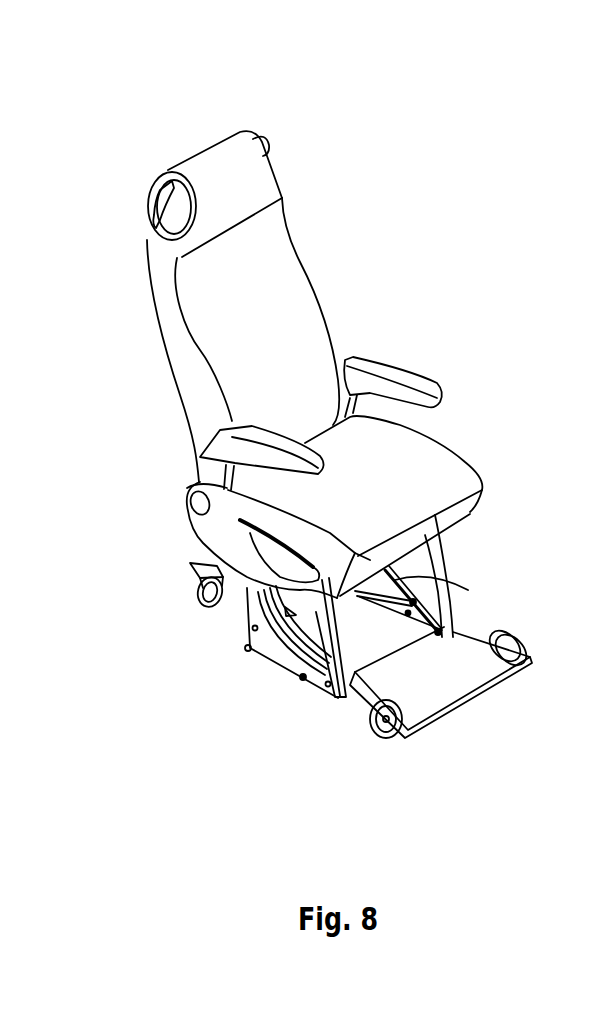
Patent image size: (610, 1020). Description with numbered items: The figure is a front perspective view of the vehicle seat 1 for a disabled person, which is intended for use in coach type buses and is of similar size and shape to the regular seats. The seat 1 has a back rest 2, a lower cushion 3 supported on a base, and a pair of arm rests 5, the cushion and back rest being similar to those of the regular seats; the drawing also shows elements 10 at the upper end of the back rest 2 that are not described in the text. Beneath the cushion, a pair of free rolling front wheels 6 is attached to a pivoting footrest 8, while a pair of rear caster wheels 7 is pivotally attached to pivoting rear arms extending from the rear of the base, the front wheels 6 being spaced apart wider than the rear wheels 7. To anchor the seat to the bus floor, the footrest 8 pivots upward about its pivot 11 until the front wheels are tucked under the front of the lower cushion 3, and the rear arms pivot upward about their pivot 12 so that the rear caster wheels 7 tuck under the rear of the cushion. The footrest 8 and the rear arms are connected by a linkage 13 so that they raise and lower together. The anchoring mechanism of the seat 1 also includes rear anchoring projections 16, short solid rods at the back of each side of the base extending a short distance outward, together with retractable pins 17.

The vehicle seat 1 is at (385, 203).
The back rest 2 is at (203, 150).
The lower cushion 3 is at (457, 463).
The arm rests 5 is at (413, 369).
The front wheels 6 is at (515, 635).
The rear caster wheels 7 is at (210, 610).
The footrest 8 is at (495, 692).
The headrest side support 10 is at (147, 213).
The pivot 11 is at (328, 687).
The pivot 12 is at (255, 631).
The linkage 13 is at (445, 585).
The rear anchoring projections 16 is at (247, 652).
The retractable pins 17 is at (303, 680).